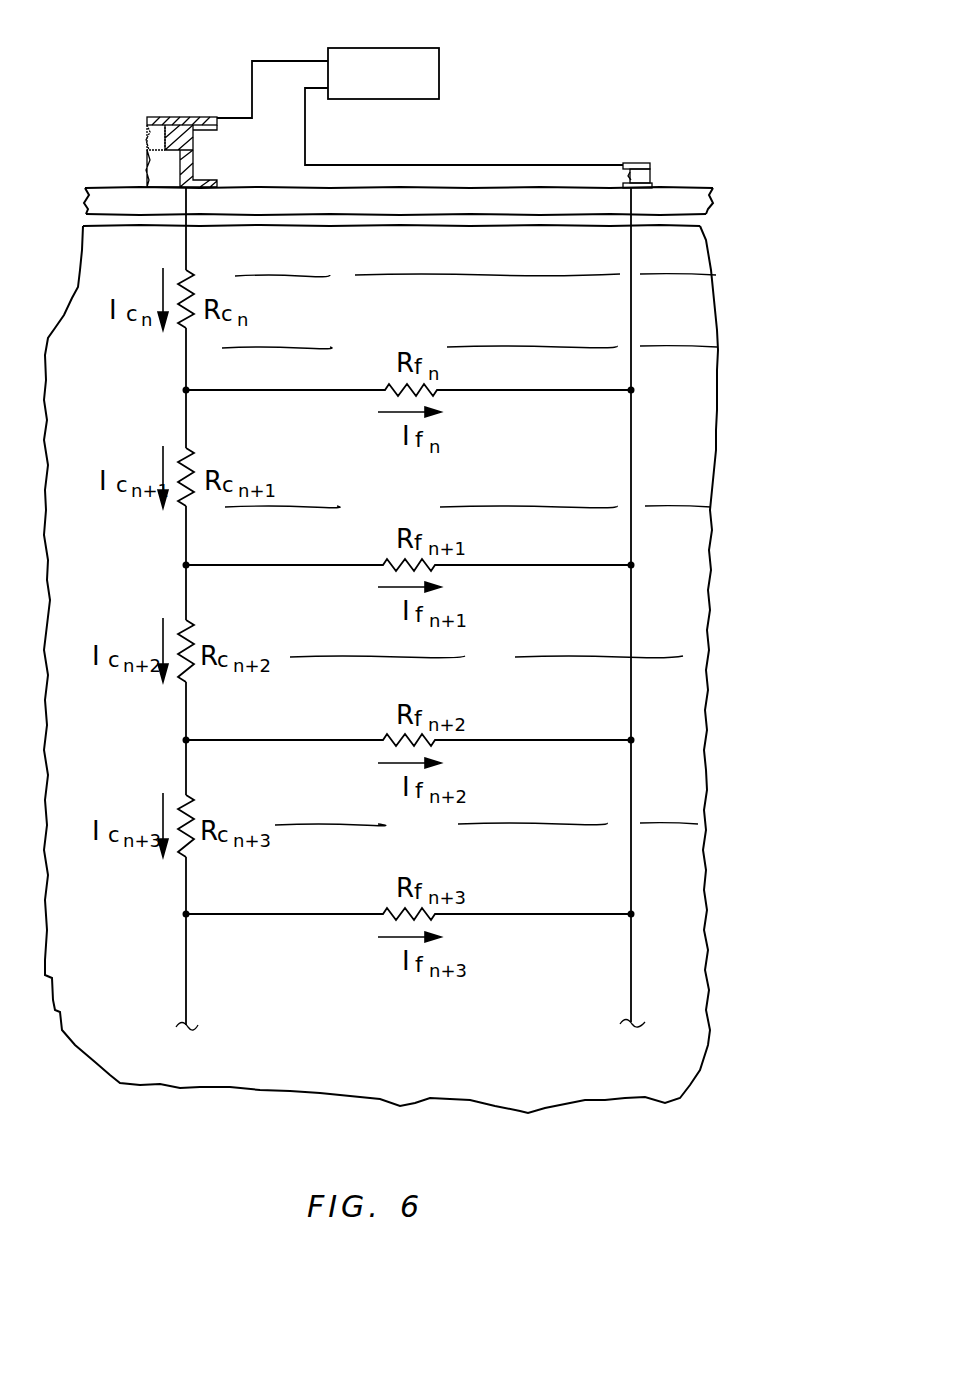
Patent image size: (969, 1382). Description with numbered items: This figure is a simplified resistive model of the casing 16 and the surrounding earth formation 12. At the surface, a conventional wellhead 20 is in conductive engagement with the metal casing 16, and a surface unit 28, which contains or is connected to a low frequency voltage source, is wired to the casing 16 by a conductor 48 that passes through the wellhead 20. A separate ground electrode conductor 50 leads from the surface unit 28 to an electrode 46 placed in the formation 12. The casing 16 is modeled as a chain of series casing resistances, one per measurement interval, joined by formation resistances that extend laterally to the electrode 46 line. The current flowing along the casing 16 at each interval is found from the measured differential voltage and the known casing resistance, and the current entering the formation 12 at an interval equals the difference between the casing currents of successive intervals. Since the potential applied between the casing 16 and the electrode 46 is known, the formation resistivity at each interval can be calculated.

The subterranean earth formation 12 is at (528, 1113).
The casing 16 is at (188, 198).
The wellhead 20 is at (194, 156).
The surface unit 28 is at (391, 48).
The electrode 46 is at (629, 199).
The conductor 48 is at (251, 80).
The ground electrode conductor 50 is at (457, 165).